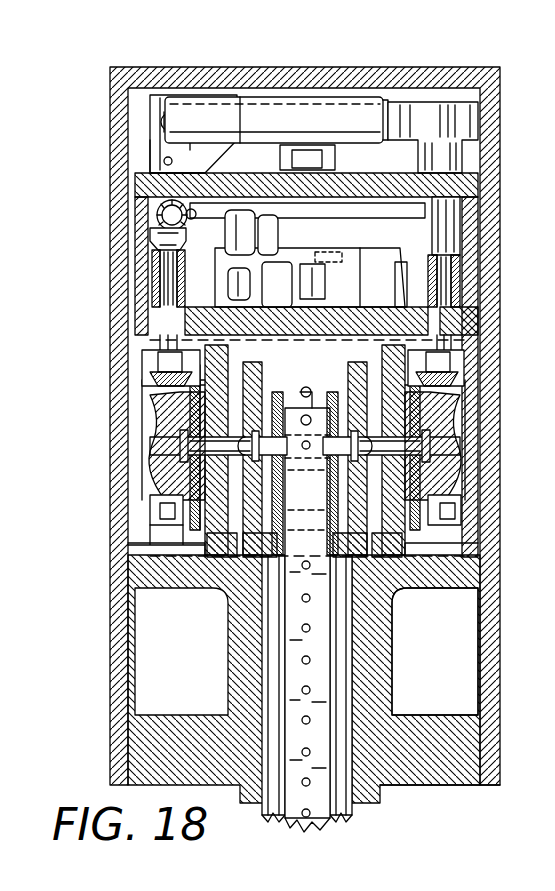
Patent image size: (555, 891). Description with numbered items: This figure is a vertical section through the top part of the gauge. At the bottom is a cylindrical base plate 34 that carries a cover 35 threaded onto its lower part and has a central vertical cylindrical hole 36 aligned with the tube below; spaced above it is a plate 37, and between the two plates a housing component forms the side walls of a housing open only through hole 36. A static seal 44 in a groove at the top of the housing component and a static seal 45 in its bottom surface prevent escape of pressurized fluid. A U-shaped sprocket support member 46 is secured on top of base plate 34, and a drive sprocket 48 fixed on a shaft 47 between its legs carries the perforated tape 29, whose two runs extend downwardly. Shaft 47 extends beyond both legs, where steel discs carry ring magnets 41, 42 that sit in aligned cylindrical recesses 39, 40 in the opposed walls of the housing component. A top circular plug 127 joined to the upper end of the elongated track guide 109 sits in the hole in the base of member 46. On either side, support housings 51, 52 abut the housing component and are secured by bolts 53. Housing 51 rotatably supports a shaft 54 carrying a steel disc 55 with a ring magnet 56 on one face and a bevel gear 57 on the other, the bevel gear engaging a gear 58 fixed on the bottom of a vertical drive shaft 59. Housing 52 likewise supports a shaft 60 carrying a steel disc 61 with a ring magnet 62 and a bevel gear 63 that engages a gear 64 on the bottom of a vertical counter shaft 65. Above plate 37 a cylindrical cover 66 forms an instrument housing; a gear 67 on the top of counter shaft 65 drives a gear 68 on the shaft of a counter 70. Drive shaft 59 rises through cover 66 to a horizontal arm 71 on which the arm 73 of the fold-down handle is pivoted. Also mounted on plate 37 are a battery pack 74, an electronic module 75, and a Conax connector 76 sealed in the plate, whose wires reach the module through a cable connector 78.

The perforated tape 29 is at (332, 684).
The base plate 34 is at (420, 786).
The cover 35 is at (165, 68).
The central vertical cylindrical hole 36 is at (272, 632).
The plate 37 is at (130, 318).
The cylindrical recess 39 is at (375, 350).
The cylindrical recess 40 is at (235, 350).
The ring magnet 41 is at (298, 376).
The ring magnet 42 is at (265, 380).
The static seal 44 is at (384, 332).
The static seal 45 is at (398, 592).
The sprocket support member 46 is at (212, 565).
The shaft 47 is at (276, 446).
The drive sprocket 48 is at (345, 425).
The support housing 51 is at (465, 350).
The support housing 52 is at (148, 412).
The bolts 53 is at (160, 506).
The shaft 54 is at (472, 462).
The steel disc 55 is at (470, 397).
The ring magnet 56 is at (472, 422).
The bevel gear 57 is at (490, 340).
The gear 58 is at (456, 378).
The vertical drive shaft 59 is at (455, 235).
The shaft 60 is at (165, 452).
The steel disc 61 is at (175, 546).
The ring magnet 62 is at (195, 492).
The bevel gear 63 is at (150, 373).
The gear 64 is at (148, 359).
The vertical counter shaft 65 is at (160, 262).
The cylindrical cover 66 is at (165, 212).
The gear 67 is at (150, 224).
The gear 68 is at (142, 186).
The counter 70 is at (150, 163).
The horizontal arm 71 is at (150, 95).
The arm 73 is at (345, 105).
The battery pack 74 is at (310, 222).
The electronic module 75 is at (330, 250).
The Conax connector 76 is at (230, 282).
The cable connector 78 is at (355, 275).
The track guide 109 is at (358, 814).
The top circular plug 127 is at (405, 621).